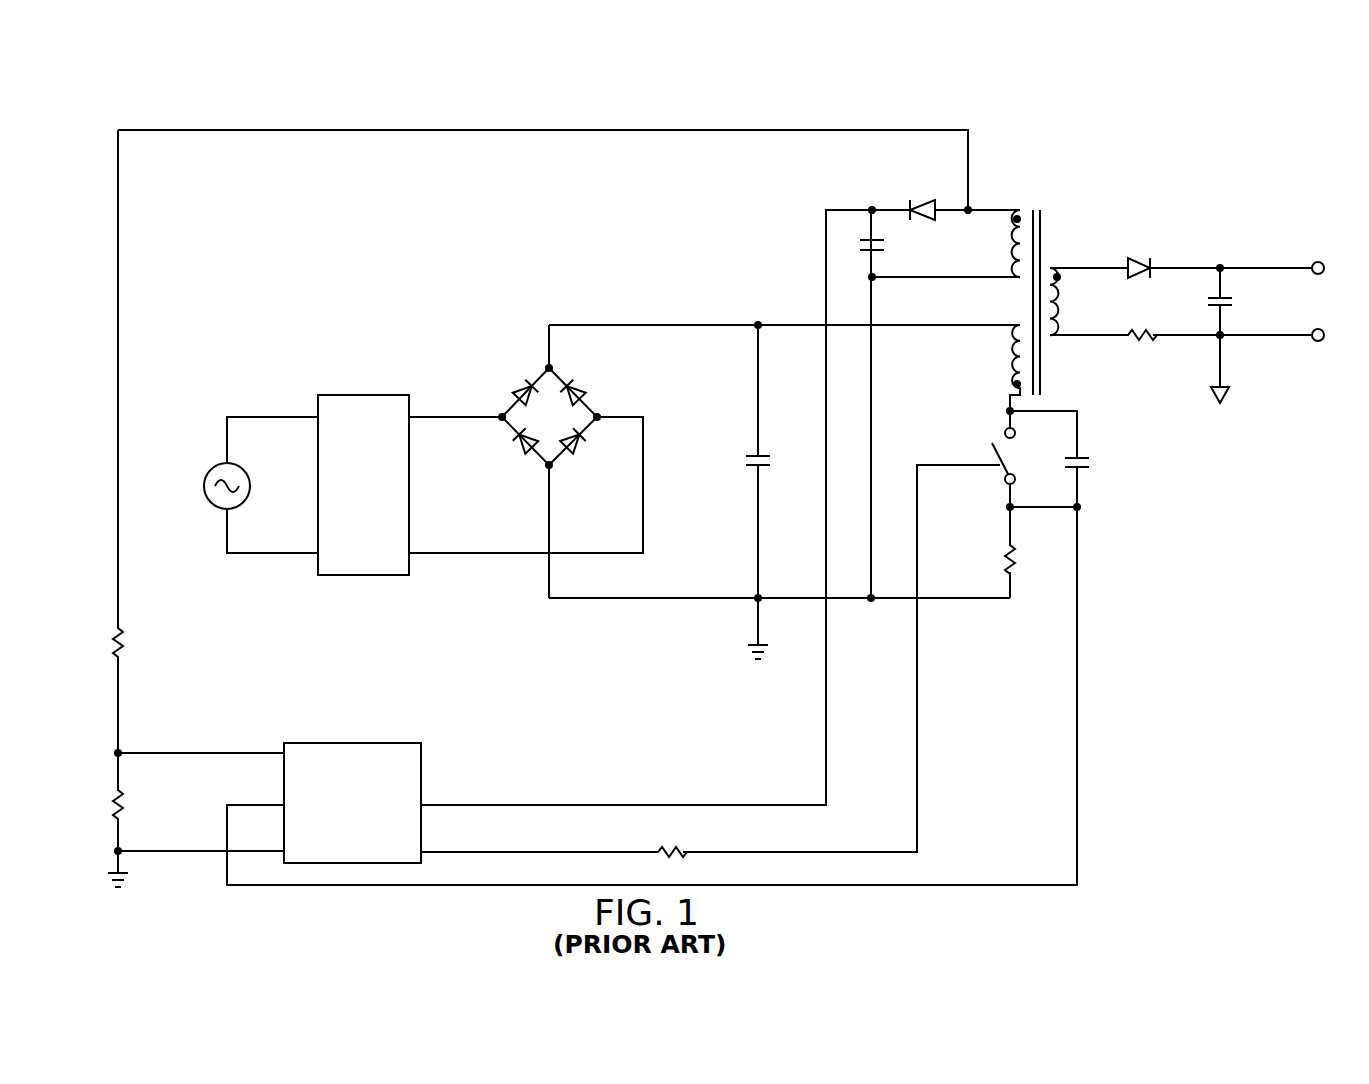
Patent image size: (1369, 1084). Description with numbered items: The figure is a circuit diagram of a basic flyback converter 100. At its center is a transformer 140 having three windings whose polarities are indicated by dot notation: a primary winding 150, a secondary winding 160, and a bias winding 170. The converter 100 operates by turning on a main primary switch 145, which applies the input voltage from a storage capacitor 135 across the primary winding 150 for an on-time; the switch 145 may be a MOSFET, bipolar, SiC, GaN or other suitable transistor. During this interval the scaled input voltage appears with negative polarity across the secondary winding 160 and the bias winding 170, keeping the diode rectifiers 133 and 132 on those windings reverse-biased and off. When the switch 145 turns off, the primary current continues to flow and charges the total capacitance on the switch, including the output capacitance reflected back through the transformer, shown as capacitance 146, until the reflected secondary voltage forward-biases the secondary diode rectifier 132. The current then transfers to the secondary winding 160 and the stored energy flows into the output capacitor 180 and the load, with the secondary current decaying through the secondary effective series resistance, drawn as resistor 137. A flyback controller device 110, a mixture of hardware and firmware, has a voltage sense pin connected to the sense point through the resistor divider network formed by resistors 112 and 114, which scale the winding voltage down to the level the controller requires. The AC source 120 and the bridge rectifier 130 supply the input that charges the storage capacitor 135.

The flyback converter 100 is at (214, 92).
The flyback controller device 110 is at (352, 741).
The top resistor RT 112 is at (112, 640).
The bottom resistor RB 114 is at (112, 800).
The AC voltage source Vac 120 is at (212, 468).
The bridge rectifier 130 is at (537, 380).
The secondary diode rectifier 132 is at (1140, 256).
The diode rectifier 133 is at (922, 201).
The storage capacitor 135 is at (750, 462).
The secondary resistor Rsec 137 is at (1140, 344).
The transformer 140 is at (1040, 208).
The main primary switch 145 is at (992, 447).
The capacitance 146 is at (1092, 462).
The primary winding 150 is at (1012, 318).
The secondary winding 160 is at (1047, 262).
The bias winding 170 is at (1022, 208).
The output capacitor 180 is at (1235, 300).